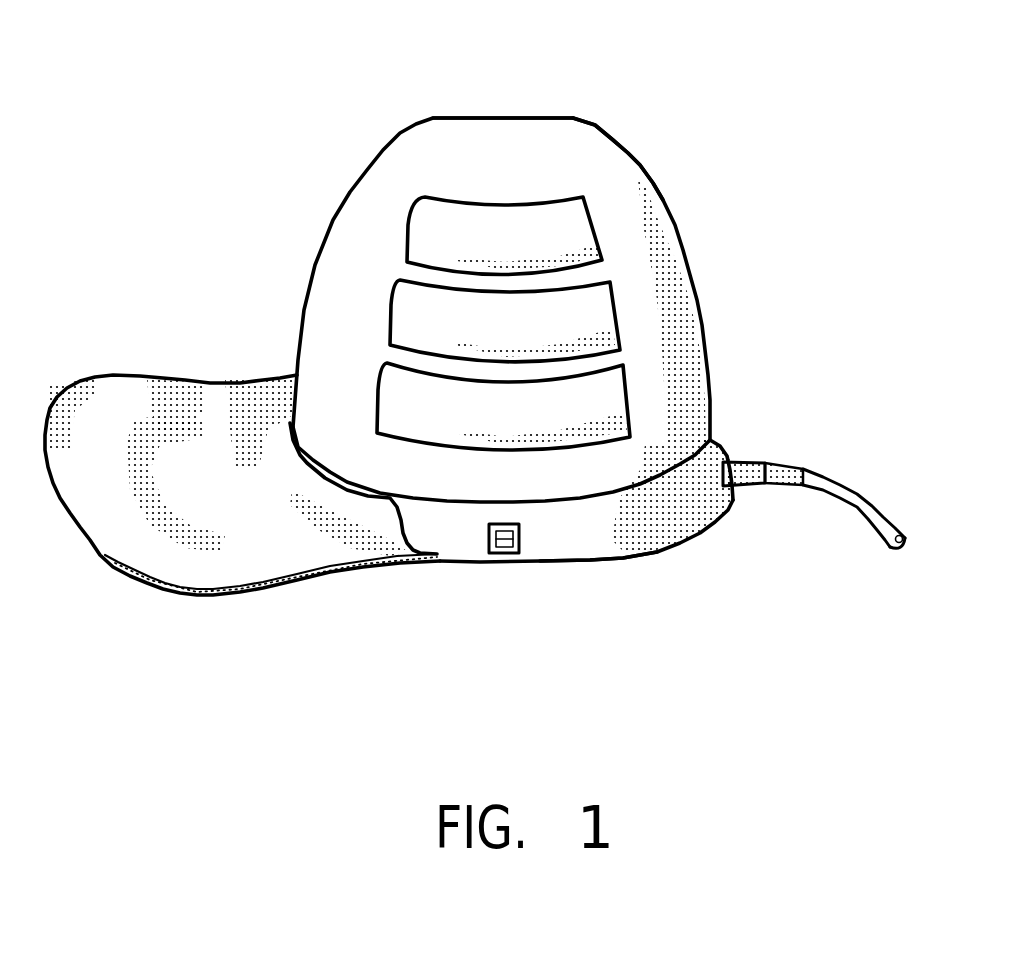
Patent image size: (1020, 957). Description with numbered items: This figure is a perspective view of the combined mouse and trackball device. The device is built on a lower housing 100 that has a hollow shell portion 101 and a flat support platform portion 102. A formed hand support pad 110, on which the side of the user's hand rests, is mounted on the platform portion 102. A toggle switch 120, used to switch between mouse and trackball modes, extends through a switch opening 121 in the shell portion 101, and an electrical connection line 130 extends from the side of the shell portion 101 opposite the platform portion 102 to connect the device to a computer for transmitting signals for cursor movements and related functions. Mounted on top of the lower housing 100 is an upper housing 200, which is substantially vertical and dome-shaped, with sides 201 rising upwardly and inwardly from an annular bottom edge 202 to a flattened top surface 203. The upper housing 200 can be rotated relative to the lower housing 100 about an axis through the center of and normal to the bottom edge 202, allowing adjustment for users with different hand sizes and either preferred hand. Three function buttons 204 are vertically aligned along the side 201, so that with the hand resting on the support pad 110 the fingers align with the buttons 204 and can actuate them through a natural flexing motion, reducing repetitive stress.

The lower housing 100 is at (655, 518).
The hollow shell portion 101 is at (593, 538).
The flat support platform portion 102 is at (160, 595).
The hand support pad 110 is at (135, 398).
The toggle switch 120 is at (490, 550).
The switch opening 121 is at (520, 527).
The electrical connection line 130 is at (787, 470).
The upper housing 200 is at (678, 321).
The sides 201 is at (603, 160).
The annular bottom edge 202 is at (683, 470).
The flattened top surface 203 is at (498, 135).
The function buttons 204 is at (393, 412).